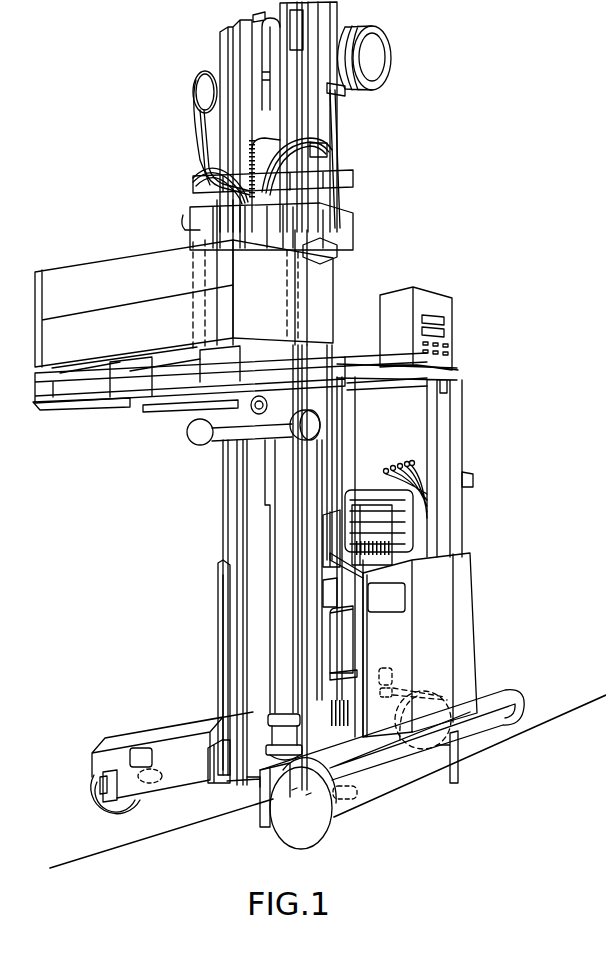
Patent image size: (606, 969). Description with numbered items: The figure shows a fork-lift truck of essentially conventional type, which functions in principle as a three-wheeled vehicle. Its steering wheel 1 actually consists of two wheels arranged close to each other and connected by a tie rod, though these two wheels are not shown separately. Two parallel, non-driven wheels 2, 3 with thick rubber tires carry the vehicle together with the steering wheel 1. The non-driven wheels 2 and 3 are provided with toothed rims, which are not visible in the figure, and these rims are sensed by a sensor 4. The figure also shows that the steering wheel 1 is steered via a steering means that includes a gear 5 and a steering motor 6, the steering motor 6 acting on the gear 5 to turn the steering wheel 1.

The steering wheel 1 is at (442, 758).
The non-driven wheel 2 is at (93, 787).
The non-driven wheel 3 is at (286, 836).
The sensor 4 is at (343, 795).
The gear 5 is at (428, 690).
The steering motor 6 is at (393, 670).